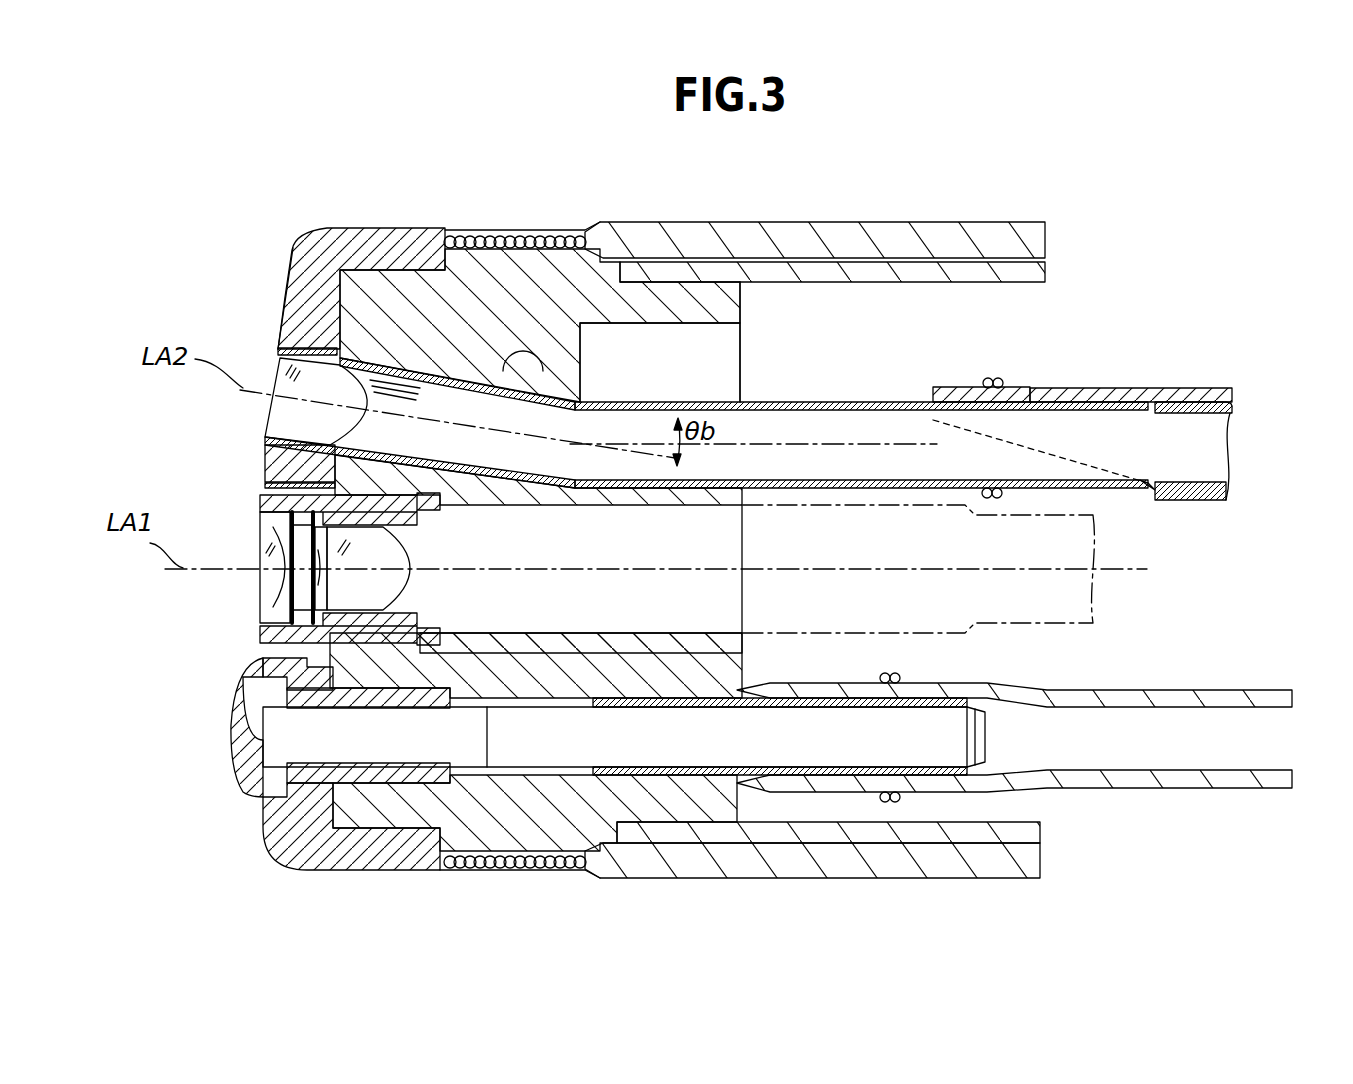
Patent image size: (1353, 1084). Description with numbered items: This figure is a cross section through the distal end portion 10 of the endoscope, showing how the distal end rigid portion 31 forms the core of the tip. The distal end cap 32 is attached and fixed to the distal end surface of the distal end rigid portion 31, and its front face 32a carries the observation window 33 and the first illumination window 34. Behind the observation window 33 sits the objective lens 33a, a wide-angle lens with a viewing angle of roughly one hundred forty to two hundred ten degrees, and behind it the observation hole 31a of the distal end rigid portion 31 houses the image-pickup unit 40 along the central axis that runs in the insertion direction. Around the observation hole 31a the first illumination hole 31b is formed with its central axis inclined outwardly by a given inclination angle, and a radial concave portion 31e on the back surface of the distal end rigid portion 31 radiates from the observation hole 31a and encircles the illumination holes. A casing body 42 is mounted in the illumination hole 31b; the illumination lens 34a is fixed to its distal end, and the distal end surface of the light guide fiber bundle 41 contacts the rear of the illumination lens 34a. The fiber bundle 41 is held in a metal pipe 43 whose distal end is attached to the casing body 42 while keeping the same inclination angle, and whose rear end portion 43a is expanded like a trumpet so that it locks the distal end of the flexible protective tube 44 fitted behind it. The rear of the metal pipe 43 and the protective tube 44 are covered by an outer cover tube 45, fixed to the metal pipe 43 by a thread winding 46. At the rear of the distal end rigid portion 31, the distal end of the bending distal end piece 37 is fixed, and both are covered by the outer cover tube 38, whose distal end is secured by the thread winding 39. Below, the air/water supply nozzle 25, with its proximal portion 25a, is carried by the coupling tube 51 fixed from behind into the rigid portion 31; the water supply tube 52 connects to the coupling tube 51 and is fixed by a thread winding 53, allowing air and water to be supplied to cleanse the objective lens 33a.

The distal end portion 10 is at (856, 200).
The air/water supply nozzle 25 is at (238, 800).
The cap engaging portion 25a is at (257, 680).
The distal end rigid portion 31 is at (740, 310).
The observation hole 31a is at (628, 651).
The first illumination hole 31b is at (540, 362).
The radial concave portion 31e is at (713, 353).
The distal end cap 32 is at (348, 872).
The housing front face 32a is at (283, 301).
The observation window 33 is at (257, 602).
The objective lens 33a is at (275, 527).
The first illumination window 34 is at (278, 362).
The illumination lens 34a is at (283, 413).
The bending distal end piece 37 is at (868, 268).
The outer cover tube 38 is at (722, 237).
The thread winding 39 is at (533, 237).
The image-pickup unit 40 is at (568, 551).
The light guide fiber bundle 41 is at (845, 423).
The casing body 42 is at (463, 365).
The metal pipe 43 is at (890, 398).
The rear end portion 43a is at (1150, 492).
The protective tube 44 is at (1203, 435).
The outer cover tube 45 is at (1168, 392).
The thread winding 46 is at (993, 378).
The coupling tube 51 is at (955, 738).
The water supply tube 52 is at (1183, 690).
The thread winding 53 is at (900, 676).